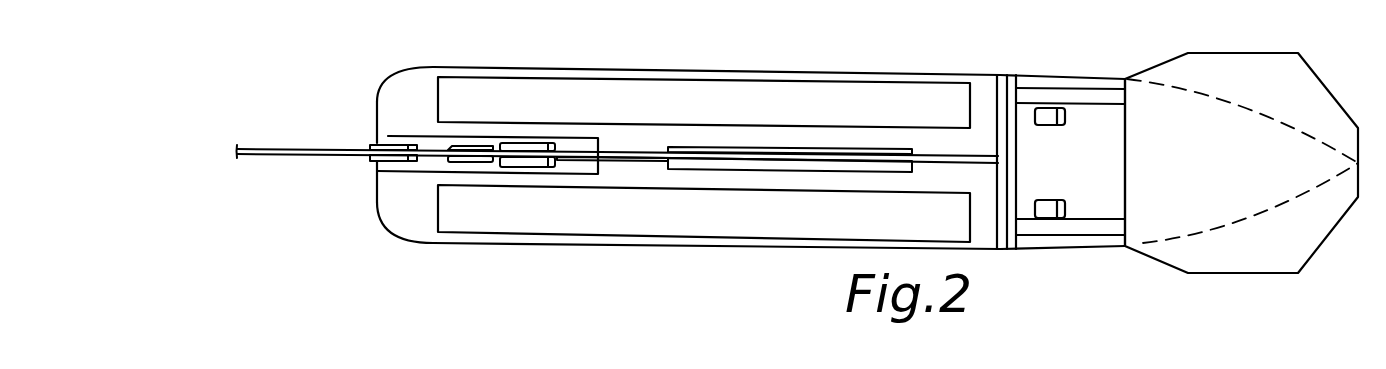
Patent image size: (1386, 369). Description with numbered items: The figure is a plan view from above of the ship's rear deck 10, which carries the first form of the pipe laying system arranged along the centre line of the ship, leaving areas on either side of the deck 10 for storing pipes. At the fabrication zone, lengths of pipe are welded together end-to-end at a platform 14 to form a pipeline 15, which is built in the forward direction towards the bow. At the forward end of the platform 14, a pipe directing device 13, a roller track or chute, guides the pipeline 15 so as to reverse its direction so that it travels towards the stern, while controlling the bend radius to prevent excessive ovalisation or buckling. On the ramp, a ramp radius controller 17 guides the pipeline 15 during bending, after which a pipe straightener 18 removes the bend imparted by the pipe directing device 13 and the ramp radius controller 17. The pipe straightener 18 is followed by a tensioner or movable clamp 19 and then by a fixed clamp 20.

The rear deck 10 is at (413, 91).
The pipe directing device 13 is at (943, 155).
The platform 14 is at (746, 147).
The pipeline 15 is at (260, 148).
The ramp radius controller 17 is at (640, 151).
The pipe straightener 18 is at (528, 144).
The tensioner or movable clamp 19 is at (469, 147).
The fixed clamp 20 is at (388, 136).